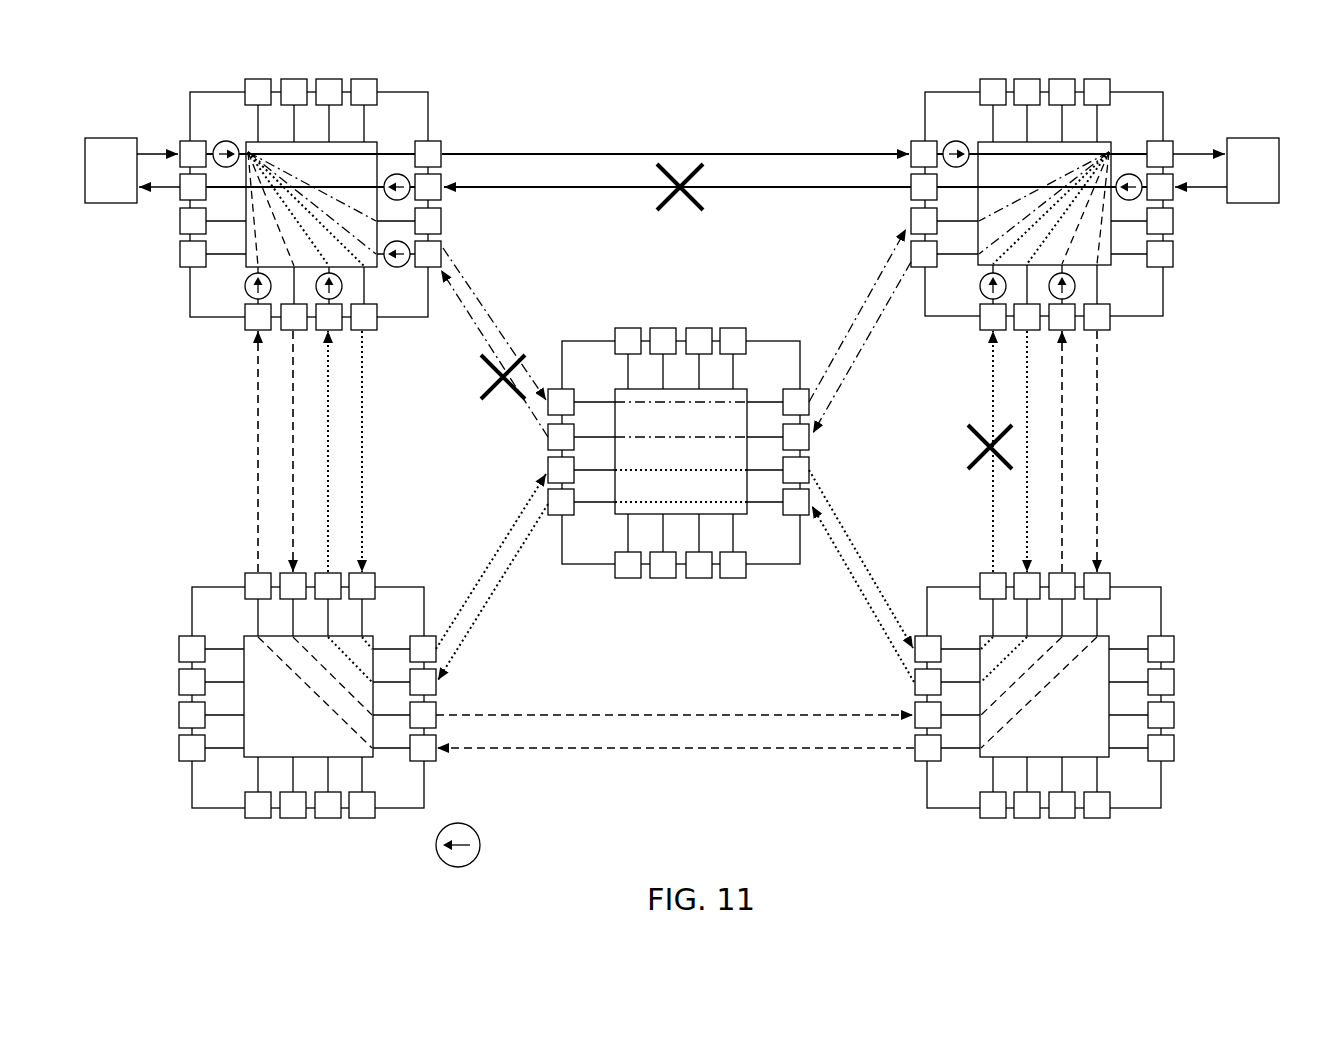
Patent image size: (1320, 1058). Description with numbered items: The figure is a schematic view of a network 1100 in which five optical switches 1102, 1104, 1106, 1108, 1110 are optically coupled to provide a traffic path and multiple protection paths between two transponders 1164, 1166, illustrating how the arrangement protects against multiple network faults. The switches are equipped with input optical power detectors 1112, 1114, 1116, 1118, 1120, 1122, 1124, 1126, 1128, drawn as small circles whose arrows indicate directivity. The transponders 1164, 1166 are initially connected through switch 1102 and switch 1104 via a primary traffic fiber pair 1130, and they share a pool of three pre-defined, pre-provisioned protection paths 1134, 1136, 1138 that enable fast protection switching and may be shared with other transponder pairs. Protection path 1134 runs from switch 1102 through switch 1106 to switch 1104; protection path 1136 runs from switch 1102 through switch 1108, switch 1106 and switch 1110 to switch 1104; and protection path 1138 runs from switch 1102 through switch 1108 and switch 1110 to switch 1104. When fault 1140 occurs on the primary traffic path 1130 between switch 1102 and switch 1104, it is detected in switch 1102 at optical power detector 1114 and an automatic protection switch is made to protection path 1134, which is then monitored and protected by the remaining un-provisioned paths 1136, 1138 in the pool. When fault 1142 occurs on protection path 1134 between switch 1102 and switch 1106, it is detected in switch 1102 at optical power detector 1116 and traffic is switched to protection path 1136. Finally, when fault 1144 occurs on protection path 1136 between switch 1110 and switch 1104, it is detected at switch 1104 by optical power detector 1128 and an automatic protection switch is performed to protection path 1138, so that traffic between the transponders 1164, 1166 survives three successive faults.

The network 1100 is at (731, 99).
The switch 1102 is at (203, 84).
The switch 1104 is at (1221, 100).
The switch 1106 is at (791, 330).
The switch 1108 is at (183, 813).
The switch 1110 is at (1183, 601).
The input optical power detector 1112 is at (213, 146).
The input optical power detector 1114 is at (398, 173).
The input optical power detector 1116 is at (405, 264).
The input optical power detector 1118 is at (343, 287).
The input optical power detector 1120 is at (244, 285).
The input optical power detector 1122 is at (943, 146).
The input optical power detector 1124 is at (1131, 174).
The input optical power detector 1126 is at (1076, 286).
The input optical power detector 1128 is at (982, 296).
The primary traffic fiber pair 1130 is at (540, 187).
The protection path 1134 is at (472, 288).
The protection path 1136 is at (363, 522).
The protection path 1138 is at (290, 522).
The fault 1140 is at (680, 200).
The fault 1142 is at (511, 392).
The fault 1144 is at (973, 443).
The transponder 1164 is at (86, 205).
The transponder 1166 is at (1279, 205).